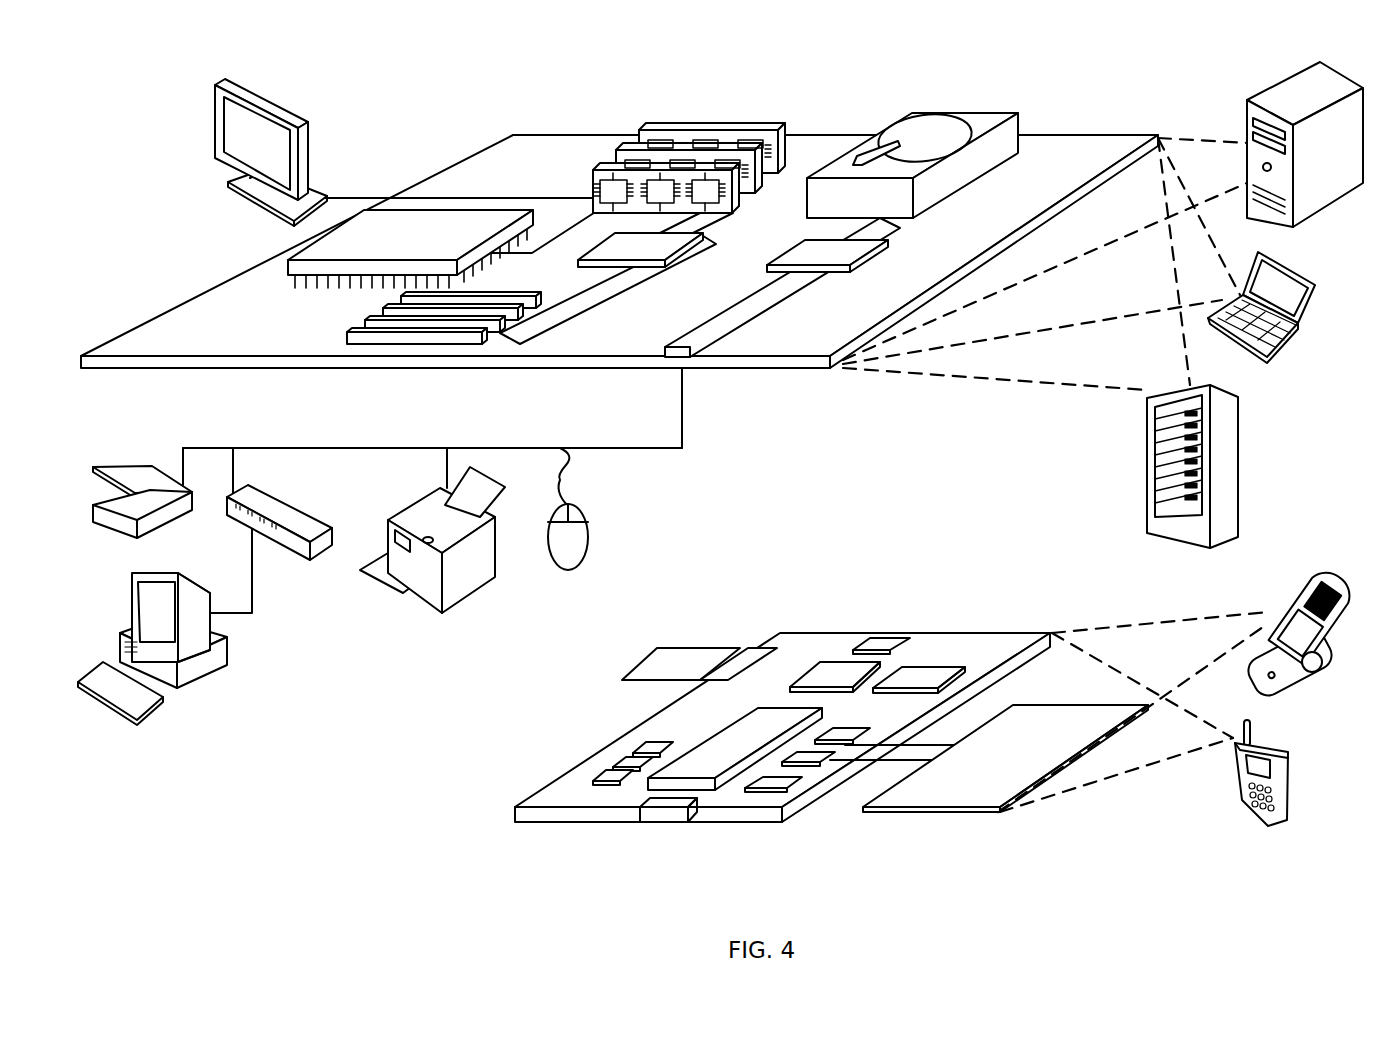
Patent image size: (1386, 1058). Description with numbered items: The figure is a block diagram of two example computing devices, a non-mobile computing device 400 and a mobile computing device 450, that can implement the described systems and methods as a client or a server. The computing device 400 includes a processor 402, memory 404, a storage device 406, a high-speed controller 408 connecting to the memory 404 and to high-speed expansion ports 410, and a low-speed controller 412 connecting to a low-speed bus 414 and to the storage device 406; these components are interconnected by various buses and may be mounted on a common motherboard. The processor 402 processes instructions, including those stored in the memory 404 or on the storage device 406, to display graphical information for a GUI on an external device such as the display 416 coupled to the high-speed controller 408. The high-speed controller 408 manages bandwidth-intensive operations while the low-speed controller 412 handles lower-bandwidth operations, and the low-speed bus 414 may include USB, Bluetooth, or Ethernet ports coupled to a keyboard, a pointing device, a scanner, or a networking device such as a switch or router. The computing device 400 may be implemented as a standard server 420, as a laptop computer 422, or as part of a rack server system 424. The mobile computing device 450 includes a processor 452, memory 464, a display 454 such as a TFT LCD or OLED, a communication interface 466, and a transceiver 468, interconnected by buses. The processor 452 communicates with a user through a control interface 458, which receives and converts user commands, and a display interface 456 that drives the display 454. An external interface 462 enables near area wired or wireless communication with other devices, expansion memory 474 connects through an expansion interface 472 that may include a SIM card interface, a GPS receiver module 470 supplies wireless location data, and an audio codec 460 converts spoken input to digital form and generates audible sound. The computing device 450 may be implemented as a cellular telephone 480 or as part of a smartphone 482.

The computing device 400 is at (112, 92).
The processor 402 is at (300, 263).
The memory 404 is at (648, 128).
The storage device 406 is at (910, 112).
The high-speed controller 408 is at (613, 250).
The high-speed expansion ports 410 is at (373, 326).
The low-speed controller 412 is at (800, 252).
The low-speed bus 414 is at (696, 357).
The display 416 is at (215, 82).
The standard server 420 is at (1247, 118).
The laptop computer 422 is at (1318, 285).
The rack server system 424 is at (1147, 494).
The computing device 450 is at (488, 822).
The processor 452 is at (708, 782).
The display 454 is at (978, 808).
The display interface 456 is at (782, 786).
The control interface 458 is at (820, 762).
The audio codec 460 is at (848, 740).
The external interface 462 is at (670, 815).
The memory 464 is at (600, 770).
The communication interface 466 is at (838, 674).
The transceiver 468 is at (920, 665).
The GPS receiver module 470 is at (890, 640).
The expansion interface 472 is at (748, 652).
The expansion memory 474 is at (668, 652).
The cellular telephone 480 is at (1300, 600).
The smartphone 482 is at (1232, 790).